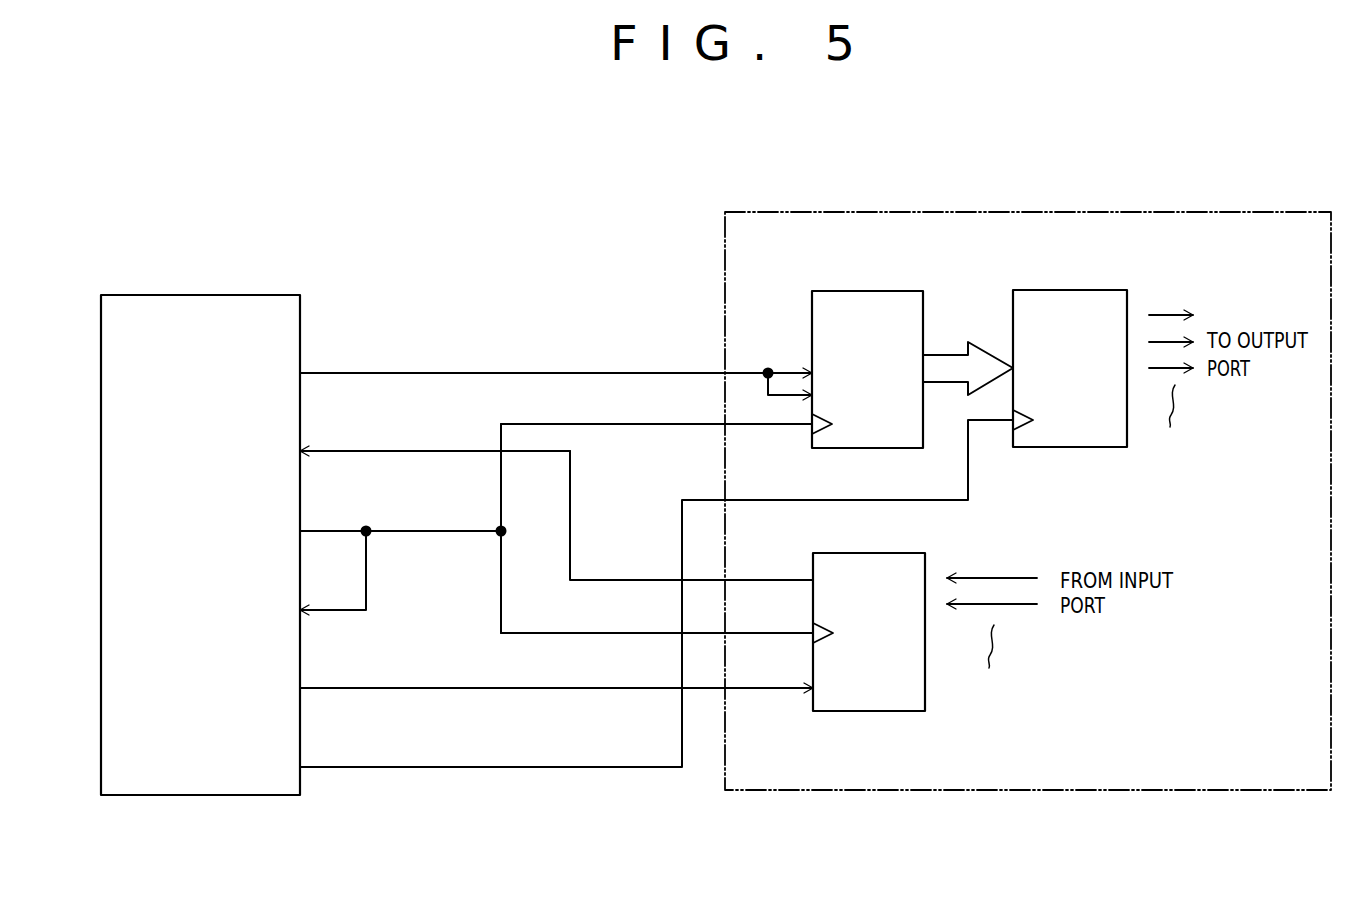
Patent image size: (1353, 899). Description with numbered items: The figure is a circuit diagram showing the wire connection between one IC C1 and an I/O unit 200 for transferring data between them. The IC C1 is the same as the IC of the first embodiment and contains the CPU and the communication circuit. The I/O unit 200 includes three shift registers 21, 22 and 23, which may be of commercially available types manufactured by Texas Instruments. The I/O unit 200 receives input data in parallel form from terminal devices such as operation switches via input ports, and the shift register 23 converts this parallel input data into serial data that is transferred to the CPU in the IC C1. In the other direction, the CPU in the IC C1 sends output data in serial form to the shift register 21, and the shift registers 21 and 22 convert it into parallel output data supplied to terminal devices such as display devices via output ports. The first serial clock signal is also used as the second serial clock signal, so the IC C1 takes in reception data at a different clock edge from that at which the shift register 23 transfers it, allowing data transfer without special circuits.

The IC C1 is at (166, 795).
The I/O unit 200 is at (1140, 212).
The shift register 21 is at (855, 448).
The shift register 22 is at (1053, 447).
The shift register 23 is at (857, 711).